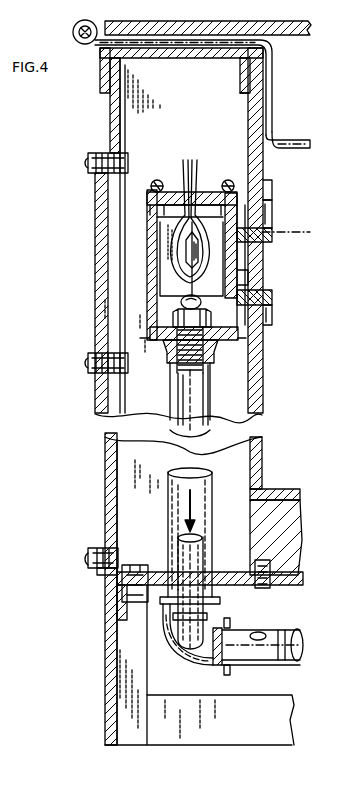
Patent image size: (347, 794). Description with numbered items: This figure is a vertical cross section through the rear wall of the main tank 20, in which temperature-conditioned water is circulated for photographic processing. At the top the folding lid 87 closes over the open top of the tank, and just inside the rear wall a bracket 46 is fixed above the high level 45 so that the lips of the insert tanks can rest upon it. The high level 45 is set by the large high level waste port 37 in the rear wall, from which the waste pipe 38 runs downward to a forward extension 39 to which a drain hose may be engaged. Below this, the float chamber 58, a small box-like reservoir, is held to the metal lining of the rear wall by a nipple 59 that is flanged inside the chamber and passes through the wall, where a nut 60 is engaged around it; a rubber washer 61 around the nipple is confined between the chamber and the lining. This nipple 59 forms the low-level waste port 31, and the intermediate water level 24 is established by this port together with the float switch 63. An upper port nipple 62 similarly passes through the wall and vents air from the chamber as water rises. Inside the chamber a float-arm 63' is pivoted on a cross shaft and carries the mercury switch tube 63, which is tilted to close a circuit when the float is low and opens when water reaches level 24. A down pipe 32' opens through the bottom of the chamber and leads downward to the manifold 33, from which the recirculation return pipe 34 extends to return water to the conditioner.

The folding lid 87 is at (164, 27).
The bracket 46 is at (291, 140).
The high level 45 is at (275, 195).
The high level waste port 37 is at (272, 208).
The intermediate water level 24 is at (298, 242).
The washer 61 is at (262, 277).
The low-level waste port 31 is at (270, 296).
The nut 60 is at (272, 326).
The float switch 63 is at (166, 223).
The float-arm 63' is at (179, 261).
The upper port nipple 62 is at (208, 287).
The float chamber 58 is at (153, 346).
The nipple 59 is at (246, 330).
The down pipe 32' is at (206, 506).
The main tank 20 is at (278, 490).
The waste pipe 38 is at (173, 506).
The recirculation return pipe 34 is at (241, 634).
The manifold 33 is at (212, 660).
The forward extension 39 is at (284, 648).